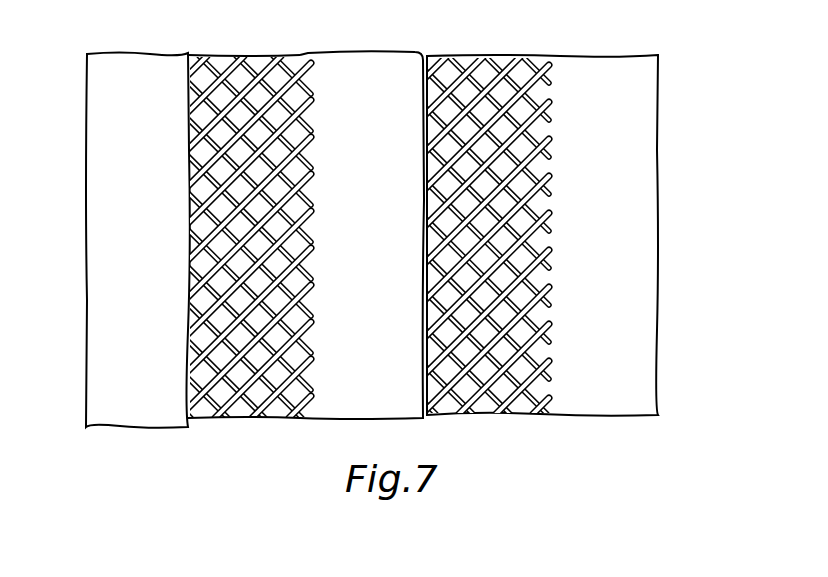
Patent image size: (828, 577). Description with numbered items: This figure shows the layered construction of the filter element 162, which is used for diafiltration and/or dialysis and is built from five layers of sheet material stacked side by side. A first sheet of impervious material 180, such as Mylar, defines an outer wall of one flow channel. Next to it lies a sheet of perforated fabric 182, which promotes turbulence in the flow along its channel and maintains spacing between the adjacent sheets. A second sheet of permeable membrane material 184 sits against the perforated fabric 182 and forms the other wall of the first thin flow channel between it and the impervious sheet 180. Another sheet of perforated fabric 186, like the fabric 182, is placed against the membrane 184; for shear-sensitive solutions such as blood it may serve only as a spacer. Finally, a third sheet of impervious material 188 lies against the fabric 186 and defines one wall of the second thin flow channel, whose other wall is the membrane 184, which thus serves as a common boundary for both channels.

The filter element 162 is at (382, 223).
The first sheet of impervious material 180 is at (116, 228).
The sheet of perforated fabric 182 is at (264, 78).
The second sheet of permeable membrane material 184 is at (357, 75).
The sheet of perforated fabric 186 is at (508, 65).
The third sheet of impervious material 188 is at (645, 190).